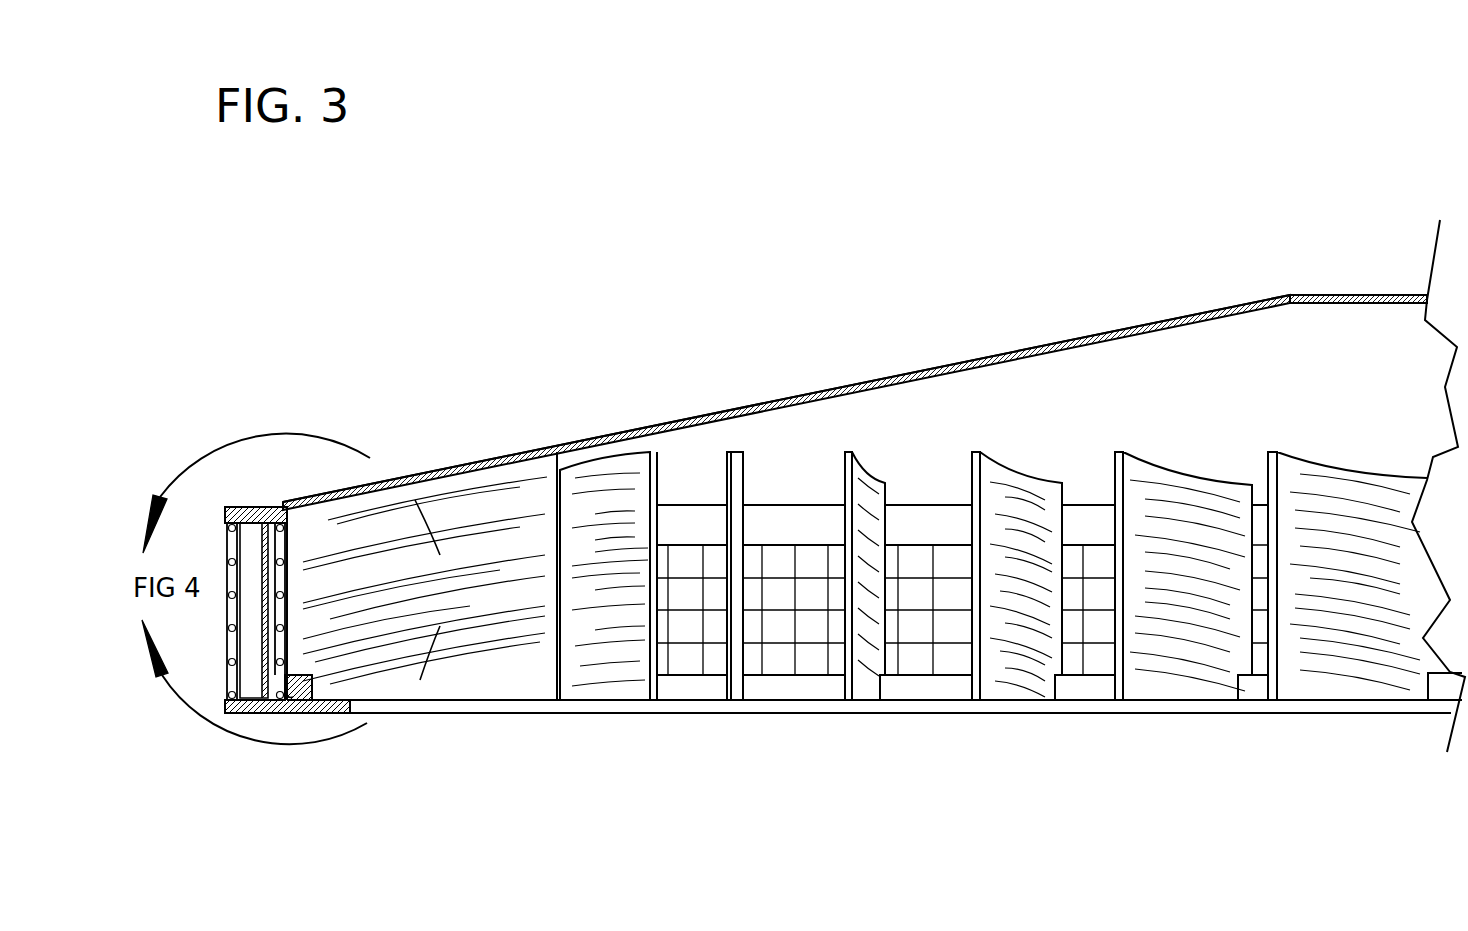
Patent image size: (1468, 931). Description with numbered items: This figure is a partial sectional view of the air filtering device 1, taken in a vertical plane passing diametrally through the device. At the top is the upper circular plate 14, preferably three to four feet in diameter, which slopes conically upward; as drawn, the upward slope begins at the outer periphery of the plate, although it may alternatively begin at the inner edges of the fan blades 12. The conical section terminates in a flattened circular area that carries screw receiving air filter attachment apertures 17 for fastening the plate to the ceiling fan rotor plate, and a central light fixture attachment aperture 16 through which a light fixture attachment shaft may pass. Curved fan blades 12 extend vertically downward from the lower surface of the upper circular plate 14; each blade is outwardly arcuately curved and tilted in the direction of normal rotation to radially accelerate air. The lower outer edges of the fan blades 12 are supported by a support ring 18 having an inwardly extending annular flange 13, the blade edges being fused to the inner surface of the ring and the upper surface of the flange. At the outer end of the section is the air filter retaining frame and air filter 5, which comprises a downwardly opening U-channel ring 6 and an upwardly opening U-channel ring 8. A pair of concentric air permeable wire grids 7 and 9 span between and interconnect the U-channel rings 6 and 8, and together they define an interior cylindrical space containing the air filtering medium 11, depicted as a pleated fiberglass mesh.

The air filtering device 1 is at (650, 420).
The air filter retaining frame and air filter 5 is at (220, 567).
The downwardly opening U-channel ring 6 is at (283, 507).
The air permeable wire grid 7 is at (230, 572).
The upwardly opening U-channel ring 8 is at (237, 717).
The air permeable wire grid 9 is at (927, 558).
The air filtering medium 11 is at (263, 637).
The fan blades 12 is at (467, 552).
The annular flange 13 is at (390, 713).
The upper circular plate 14 is at (1178, 310).
The central light fixture attachment aperture 16 is at (280, 713).
The screw receiving air filter attachment apertures 17 is at (1347, 293).
The support ring 18 is at (306, 756).